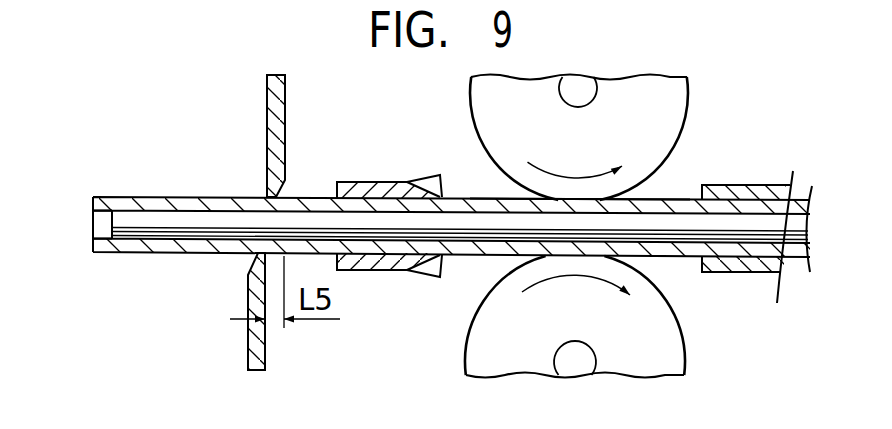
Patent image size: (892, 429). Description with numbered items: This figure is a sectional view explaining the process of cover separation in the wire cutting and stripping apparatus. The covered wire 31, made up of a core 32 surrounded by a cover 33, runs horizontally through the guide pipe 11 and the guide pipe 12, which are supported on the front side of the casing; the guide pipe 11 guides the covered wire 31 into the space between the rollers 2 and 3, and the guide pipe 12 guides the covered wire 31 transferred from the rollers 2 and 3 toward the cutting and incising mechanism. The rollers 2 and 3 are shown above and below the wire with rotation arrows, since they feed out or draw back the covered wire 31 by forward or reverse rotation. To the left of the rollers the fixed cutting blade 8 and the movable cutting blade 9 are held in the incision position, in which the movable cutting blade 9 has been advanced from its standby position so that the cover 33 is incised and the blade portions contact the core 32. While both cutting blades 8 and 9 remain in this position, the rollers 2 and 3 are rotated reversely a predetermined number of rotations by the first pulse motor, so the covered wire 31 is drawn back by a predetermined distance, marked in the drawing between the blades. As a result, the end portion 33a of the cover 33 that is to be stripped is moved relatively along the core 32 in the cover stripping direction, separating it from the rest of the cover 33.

The roller 2 is at (677, 98).
The roller 3 is at (667, 338).
The fixed cutting blade 8 is at (253, 333).
The movable cutting blade 9 is at (273, 107).
The guide pipe 11 is at (748, 192).
The guide pipe 12 is at (389, 188).
The covered wire 31 is at (496, 199).
The core 32 is at (313, 217).
The cover 33 is at (452, 272).
The end portion of the cover 33a is at (178, 197).